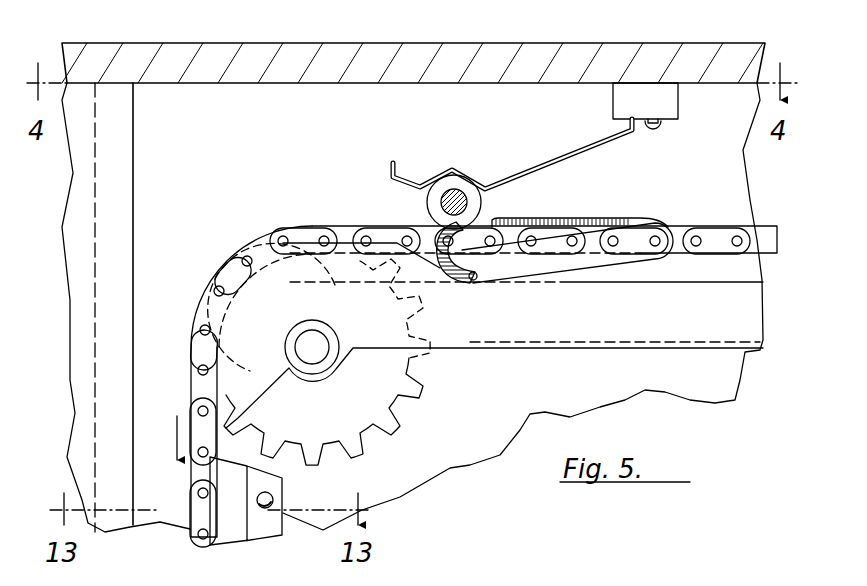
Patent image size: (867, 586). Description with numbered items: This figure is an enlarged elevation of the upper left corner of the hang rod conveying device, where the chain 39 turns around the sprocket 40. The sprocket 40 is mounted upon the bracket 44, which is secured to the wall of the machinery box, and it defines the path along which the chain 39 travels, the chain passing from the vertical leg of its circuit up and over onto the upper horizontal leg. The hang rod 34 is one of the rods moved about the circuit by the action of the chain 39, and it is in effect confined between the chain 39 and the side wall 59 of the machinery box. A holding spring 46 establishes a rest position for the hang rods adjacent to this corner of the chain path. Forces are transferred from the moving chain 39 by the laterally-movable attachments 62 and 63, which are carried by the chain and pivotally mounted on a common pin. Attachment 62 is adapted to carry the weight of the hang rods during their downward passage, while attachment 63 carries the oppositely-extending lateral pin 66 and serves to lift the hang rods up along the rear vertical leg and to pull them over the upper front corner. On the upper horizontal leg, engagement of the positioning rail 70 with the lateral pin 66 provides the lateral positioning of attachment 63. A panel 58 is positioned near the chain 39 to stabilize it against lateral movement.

The hang rod 34 is at (452, 190).
The chain 39 is at (705, 226).
The sprocket 40 is at (377, 402).
The bracket 44 is at (374, 338).
The holding spring 46 is at (567, 154).
The panel 58 is at (280, 500).
The side wall 59 is at (135, 234).
The laterally-movable attachment 62 is at (538, 218).
The laterally-movable attachment 63 is at (545, 268).
The lateral pin 66 is at (476, 280).
The positioning rail 70 is at (674, 282).